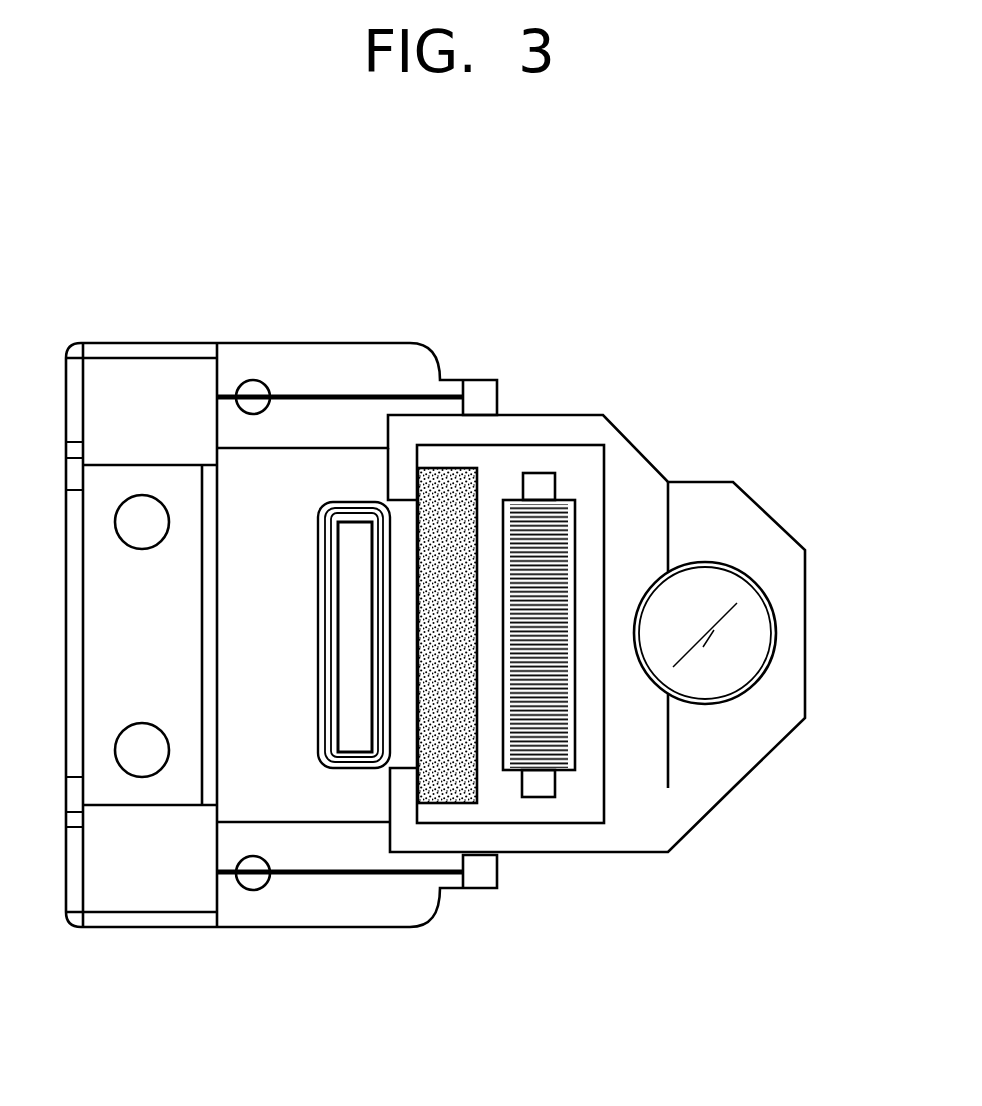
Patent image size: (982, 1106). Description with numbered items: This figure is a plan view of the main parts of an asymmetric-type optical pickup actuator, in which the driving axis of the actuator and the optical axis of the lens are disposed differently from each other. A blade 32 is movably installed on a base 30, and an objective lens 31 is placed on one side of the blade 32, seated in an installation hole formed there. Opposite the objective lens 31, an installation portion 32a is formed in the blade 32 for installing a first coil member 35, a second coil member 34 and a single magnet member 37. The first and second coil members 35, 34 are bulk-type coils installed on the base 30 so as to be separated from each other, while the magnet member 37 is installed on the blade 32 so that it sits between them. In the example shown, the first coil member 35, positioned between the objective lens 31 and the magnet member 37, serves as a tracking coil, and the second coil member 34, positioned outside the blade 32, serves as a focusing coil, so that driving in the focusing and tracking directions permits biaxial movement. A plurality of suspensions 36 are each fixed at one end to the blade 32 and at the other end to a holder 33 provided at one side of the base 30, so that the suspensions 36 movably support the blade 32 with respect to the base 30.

The base 30 is at (253, 360).
The objective lens 31 is at (758, 633).
The blade 32 is at (710, 492).
The installation portion 32a is at (535, 430).
The holder 33 is at (143, 370).
The second coil member 34 is at (364, 512).
The first coil member 35 is at (551, 520).
The suspensions 36 is at (330, 395).
The magnet member 37 is at (444, 487).